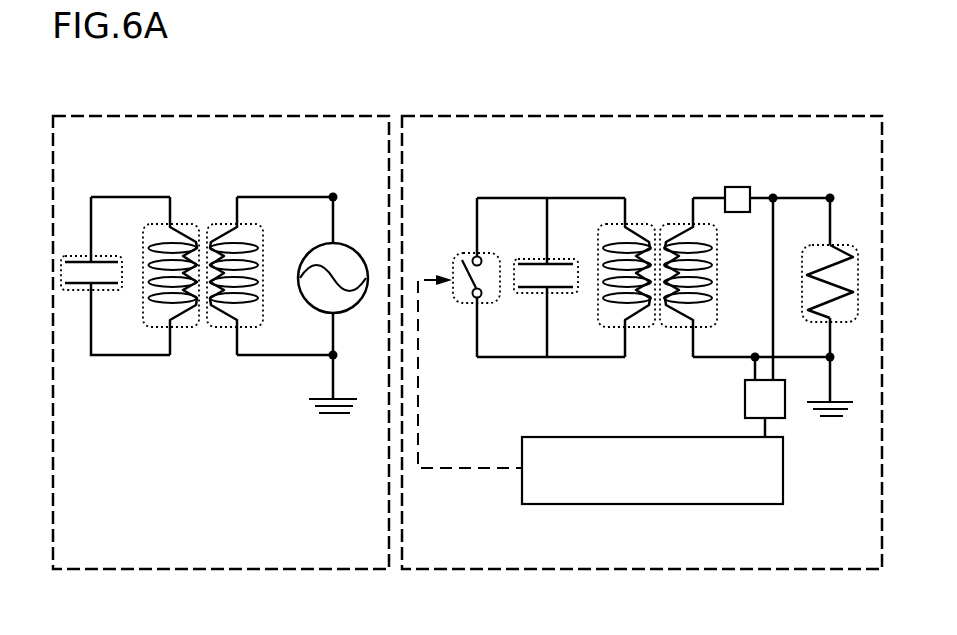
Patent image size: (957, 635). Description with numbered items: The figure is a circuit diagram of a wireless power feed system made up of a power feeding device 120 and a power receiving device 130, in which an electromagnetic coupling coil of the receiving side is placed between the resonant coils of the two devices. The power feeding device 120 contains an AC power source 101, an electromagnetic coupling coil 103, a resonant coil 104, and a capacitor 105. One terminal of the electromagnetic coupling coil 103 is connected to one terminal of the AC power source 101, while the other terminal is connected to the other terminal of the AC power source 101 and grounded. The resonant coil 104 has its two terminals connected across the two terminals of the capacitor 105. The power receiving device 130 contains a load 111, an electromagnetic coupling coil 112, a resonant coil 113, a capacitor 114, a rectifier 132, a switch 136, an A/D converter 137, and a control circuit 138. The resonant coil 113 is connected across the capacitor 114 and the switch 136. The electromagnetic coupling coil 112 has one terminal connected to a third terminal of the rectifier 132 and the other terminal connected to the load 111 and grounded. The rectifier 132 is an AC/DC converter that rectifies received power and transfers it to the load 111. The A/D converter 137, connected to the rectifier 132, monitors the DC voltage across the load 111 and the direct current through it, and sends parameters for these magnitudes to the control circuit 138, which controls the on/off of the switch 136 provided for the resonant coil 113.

The AC power source 101 is at (354, 243).
The electromagnetic coupling coil 103 is at (220, 222).
The resonant coil 104 is at (183, 222).
The capacitor 105 is at (103, 256).
The load 111 is at (845, 245).
The electromagnetic coupling coil 112 is at (677, 221).
The resonant coil 113 is at (645, 223).
The capacitor 114 is at (533, 259).
The power feeding device 120 is at (104, 548).
The power receiving device 130 is at (853, 552).
The rectifier 132 is at (737, 198).
The switch 136 is at (488, 252).
The A/D converter 137 is at (748, 401).
The control circuit 138 is at (652, 470).